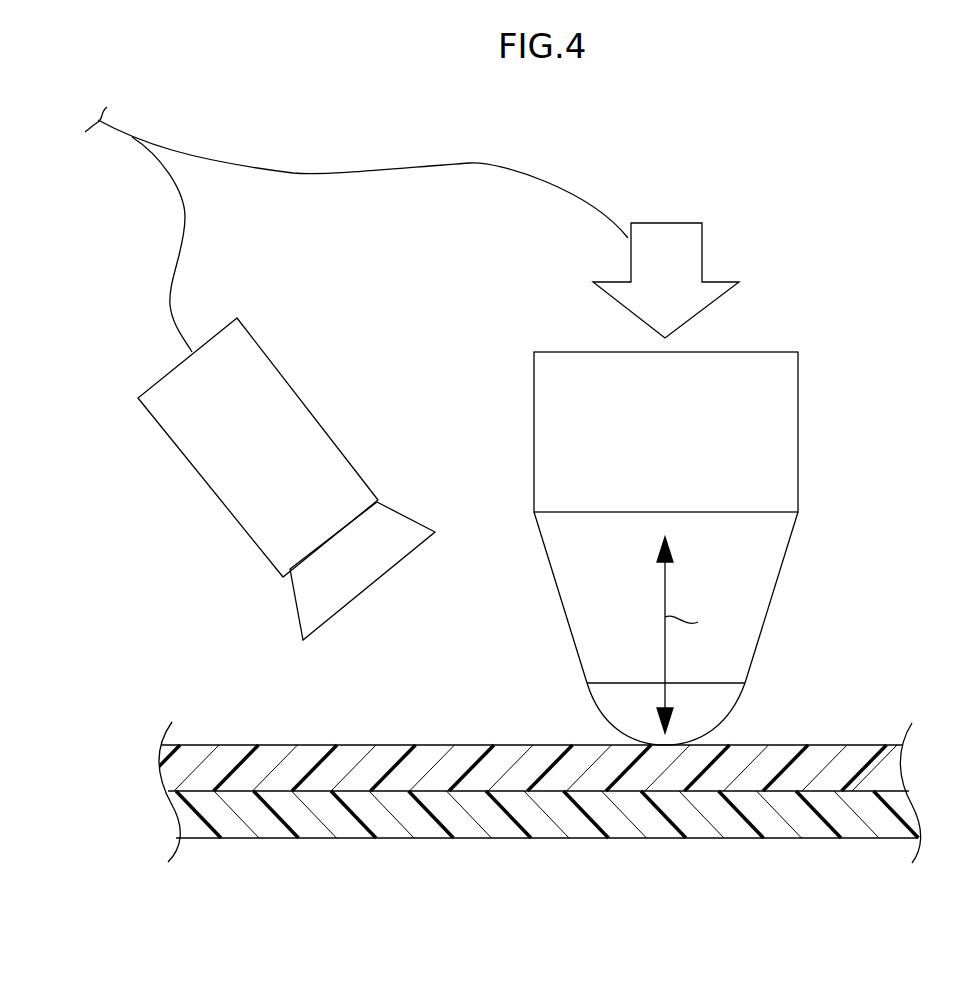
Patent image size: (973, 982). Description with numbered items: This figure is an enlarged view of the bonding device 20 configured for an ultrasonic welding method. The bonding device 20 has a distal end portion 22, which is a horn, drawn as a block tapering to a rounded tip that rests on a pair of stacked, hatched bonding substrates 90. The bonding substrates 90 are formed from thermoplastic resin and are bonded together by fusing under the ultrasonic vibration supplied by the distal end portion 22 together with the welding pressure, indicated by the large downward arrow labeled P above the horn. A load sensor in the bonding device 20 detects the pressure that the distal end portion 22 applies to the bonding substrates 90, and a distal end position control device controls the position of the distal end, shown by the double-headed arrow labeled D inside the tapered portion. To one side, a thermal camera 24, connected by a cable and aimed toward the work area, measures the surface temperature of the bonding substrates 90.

The bonding device 20 is at (729, 484).
The distal end portion 22 is at (798, 400).
The thermal camera 24 is at (310, 406).
The bonding substrates 90 is at (818, 752).